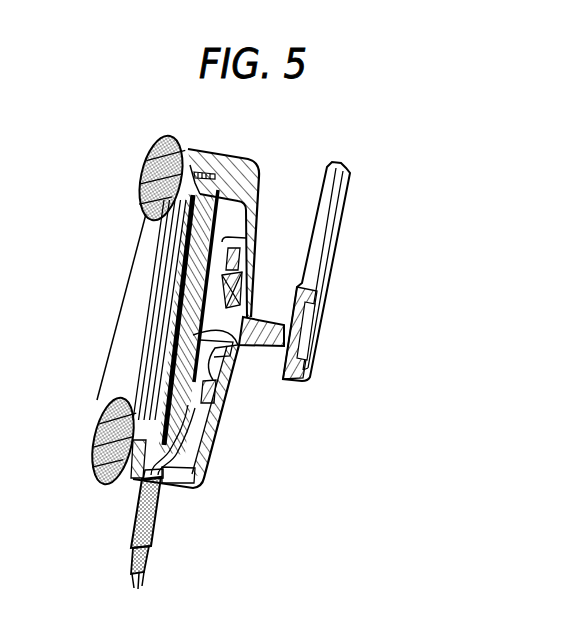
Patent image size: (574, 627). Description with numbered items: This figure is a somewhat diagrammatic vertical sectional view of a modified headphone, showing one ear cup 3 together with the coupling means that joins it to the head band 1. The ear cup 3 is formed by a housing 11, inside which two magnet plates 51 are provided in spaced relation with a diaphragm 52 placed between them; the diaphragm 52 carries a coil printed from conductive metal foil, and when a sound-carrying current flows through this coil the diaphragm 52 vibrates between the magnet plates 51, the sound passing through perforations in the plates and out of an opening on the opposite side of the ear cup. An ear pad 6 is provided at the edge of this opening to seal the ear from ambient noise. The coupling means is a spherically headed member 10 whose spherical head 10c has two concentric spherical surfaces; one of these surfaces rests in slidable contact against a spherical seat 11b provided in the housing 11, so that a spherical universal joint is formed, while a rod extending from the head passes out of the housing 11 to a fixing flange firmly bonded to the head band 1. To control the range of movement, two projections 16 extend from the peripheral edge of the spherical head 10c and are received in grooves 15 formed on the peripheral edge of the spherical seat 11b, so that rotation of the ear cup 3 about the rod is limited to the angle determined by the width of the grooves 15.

The head band 1 is at (333, 268).
The ear cup 3 is at (217, 423).
The ear pad 6 is at (150, 152).
The spherically headed member 10 is at (283, 311).
The spherical head 10c is at (213, 305).
The housing 11 is at (217, 155).
The spherical seat 11b is at (240, 344).
The grooves 15 is at (222, 239).
The projections 16 is at (242, 272).
The magnet plates 51 is at (187, 377).
The diaphragm 52 is at (210, 447).